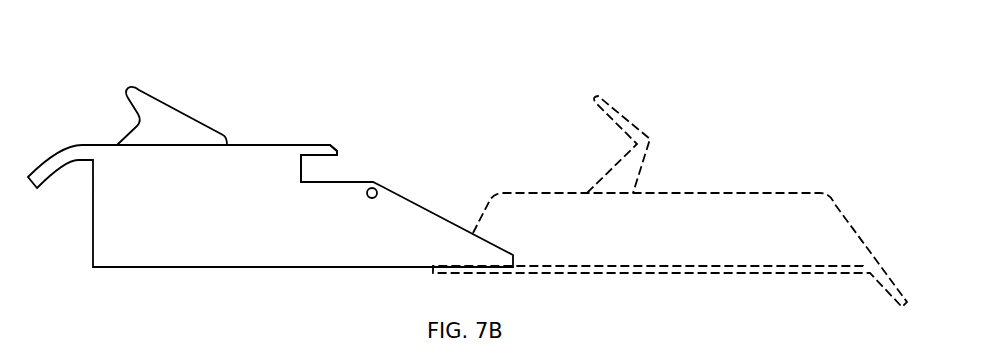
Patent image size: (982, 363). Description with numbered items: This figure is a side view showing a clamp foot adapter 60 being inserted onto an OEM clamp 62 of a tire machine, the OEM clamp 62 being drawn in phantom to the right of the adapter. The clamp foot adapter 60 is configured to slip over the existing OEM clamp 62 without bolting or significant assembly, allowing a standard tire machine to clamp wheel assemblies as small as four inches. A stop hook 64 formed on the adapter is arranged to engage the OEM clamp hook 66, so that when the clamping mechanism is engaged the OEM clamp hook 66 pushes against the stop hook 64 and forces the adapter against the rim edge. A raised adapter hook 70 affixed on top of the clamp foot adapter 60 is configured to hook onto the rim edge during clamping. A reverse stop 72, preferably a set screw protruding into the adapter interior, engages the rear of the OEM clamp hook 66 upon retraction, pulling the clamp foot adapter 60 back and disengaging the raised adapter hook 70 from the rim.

The clamp foot adapter 60 is at (297, 105).
The OEM clamp 62 is at (710, 193).
The stop hook 64 is at (337, 149).
The OEM clamp hook 66 is at (622, 115).
The raised adapter hook 70 is at (125, 98).
The reverse stop 72 is at (383, 187).